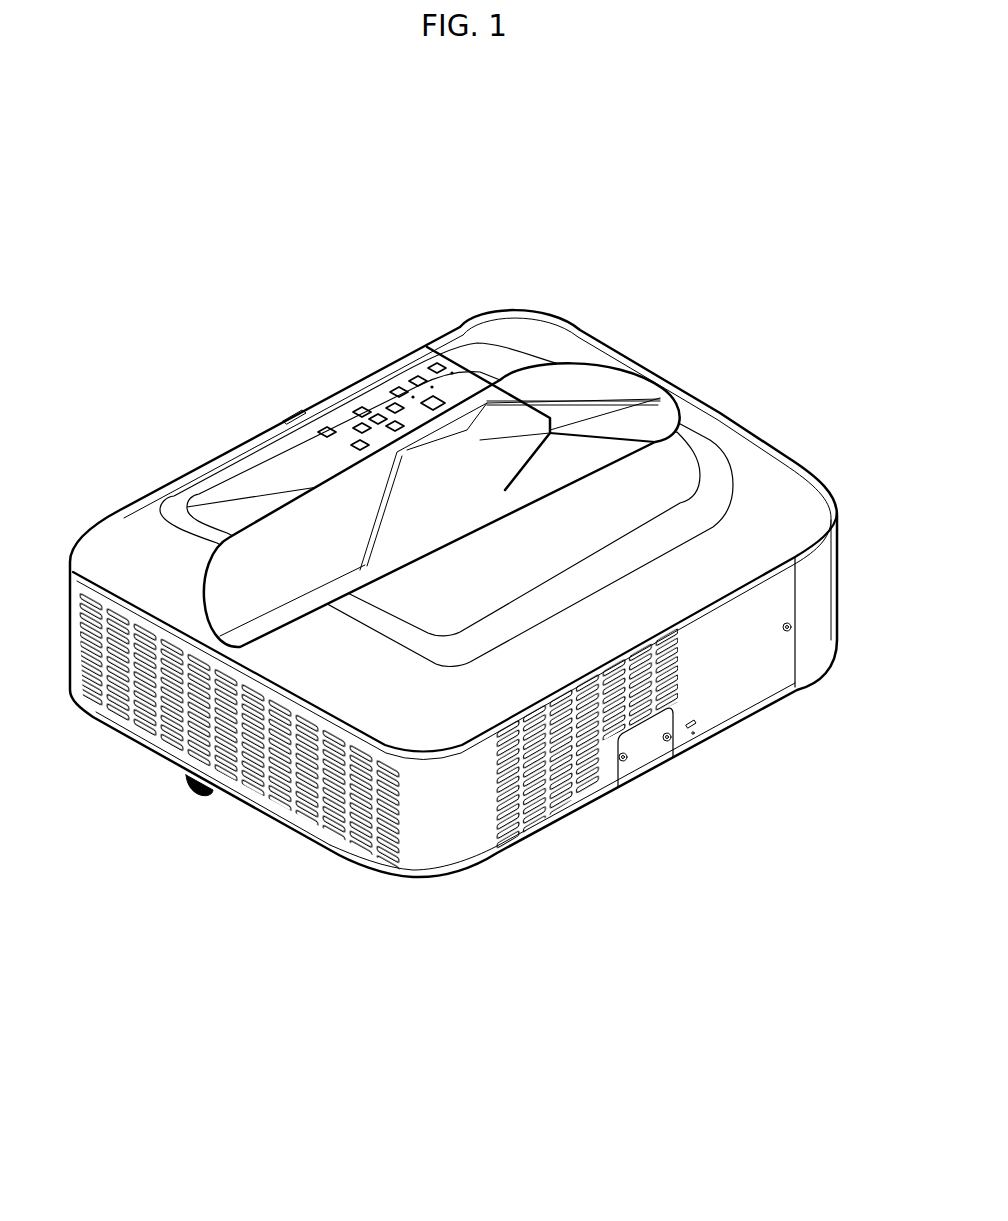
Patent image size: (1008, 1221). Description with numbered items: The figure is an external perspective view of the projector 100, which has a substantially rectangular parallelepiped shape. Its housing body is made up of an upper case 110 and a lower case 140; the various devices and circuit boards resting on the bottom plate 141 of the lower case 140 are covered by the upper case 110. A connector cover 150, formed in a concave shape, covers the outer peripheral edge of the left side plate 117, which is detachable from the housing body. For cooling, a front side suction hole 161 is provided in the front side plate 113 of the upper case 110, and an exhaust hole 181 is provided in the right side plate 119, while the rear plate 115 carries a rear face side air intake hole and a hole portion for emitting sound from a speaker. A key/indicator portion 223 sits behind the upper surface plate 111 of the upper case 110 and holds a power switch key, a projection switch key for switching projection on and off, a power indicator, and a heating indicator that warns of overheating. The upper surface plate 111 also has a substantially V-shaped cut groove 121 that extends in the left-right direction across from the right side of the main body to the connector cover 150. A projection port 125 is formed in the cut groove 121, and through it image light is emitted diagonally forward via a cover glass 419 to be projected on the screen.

The projector 100 is at (560, 213).
The upper case 110 is at (461, 607).
The upper surface plate 111 is at (665, 470).
The front side plate 113 is at (727, 674).
The rear plate 115 is at (378, 347).
The left side plate 117 is at (794, 665).
The right side plate 119 is at (230, 787).
The cut groove 121 is at (325, 580).
The projection port 125 is at (437, 440).
The cover glass 419 is at (510, 484).
The lower case 140 is at (562, 857).
The bottom plate 141 is at (418, 878).
The connector cover 150 is at (538, 336).
The front side suction hole 161 is at (557, 802).
The exhaust hole 181 is at (322, 838).
The key/indicator portion 223 is at (345, 418).